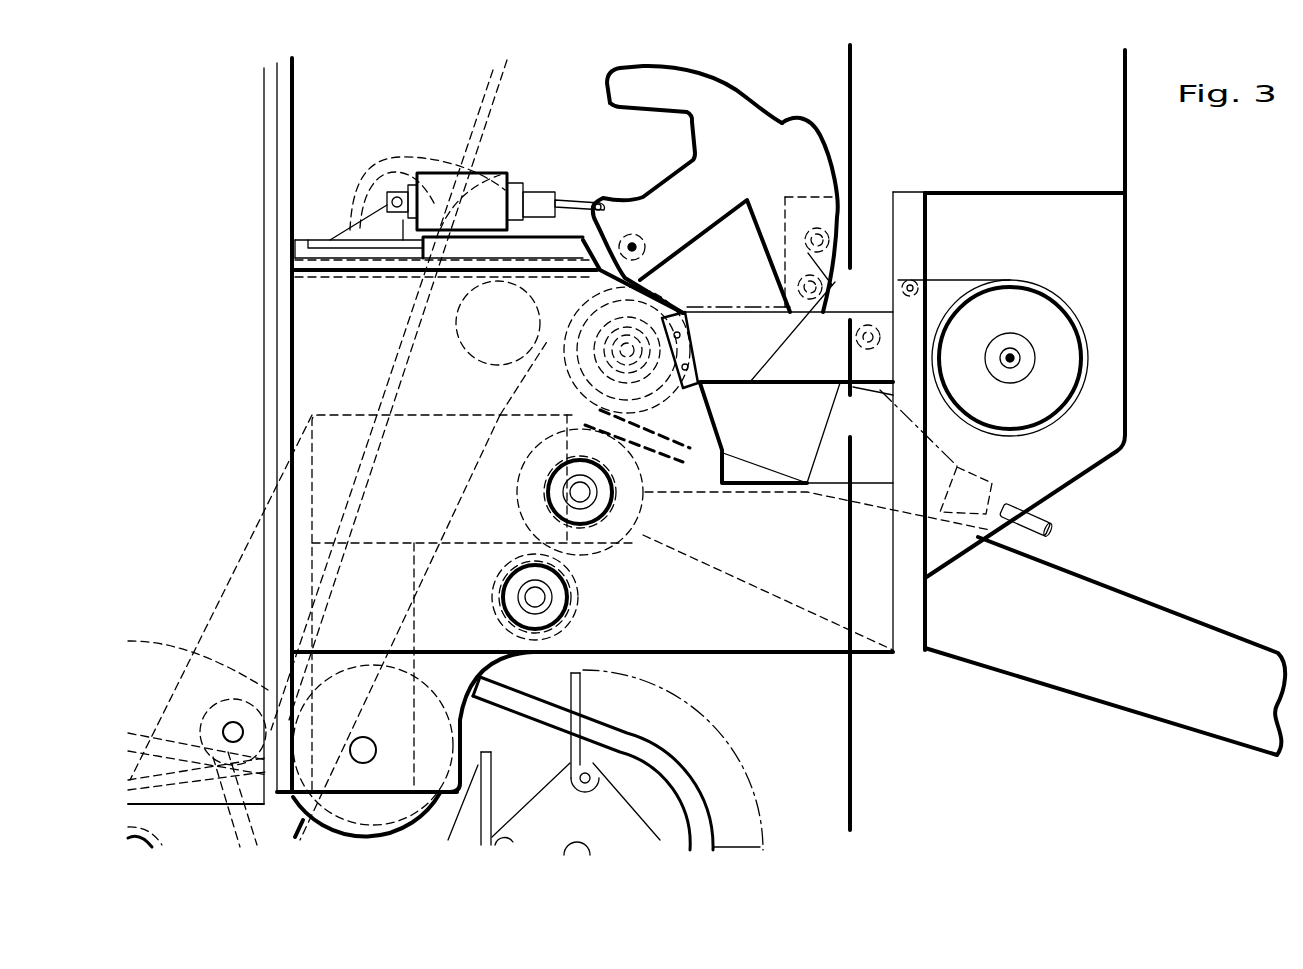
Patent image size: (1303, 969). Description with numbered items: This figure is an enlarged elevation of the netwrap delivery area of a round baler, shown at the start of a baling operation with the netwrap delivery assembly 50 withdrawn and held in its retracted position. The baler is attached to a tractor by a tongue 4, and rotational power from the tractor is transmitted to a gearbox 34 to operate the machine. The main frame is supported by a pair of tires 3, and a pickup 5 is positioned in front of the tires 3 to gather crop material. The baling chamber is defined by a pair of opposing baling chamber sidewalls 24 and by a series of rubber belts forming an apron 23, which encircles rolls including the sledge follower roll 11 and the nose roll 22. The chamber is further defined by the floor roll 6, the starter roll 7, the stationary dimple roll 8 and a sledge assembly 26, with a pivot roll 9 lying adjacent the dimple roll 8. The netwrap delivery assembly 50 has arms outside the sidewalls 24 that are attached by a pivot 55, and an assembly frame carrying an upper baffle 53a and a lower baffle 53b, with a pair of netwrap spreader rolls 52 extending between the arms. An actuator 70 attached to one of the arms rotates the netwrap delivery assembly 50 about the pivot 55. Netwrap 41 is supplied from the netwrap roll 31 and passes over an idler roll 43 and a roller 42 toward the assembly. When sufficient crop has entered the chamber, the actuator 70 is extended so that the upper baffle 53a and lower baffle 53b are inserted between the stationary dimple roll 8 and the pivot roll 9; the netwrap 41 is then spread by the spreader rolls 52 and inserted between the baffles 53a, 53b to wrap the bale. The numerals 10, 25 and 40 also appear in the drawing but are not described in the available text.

The tires 3 is at (164, 640).
The tongue 4 is at (1155, 602).
The pickup 5 is at (790, 68).
The floor roll 6 is at (369, 828).
The starter roll 7 is at (577, 590).
The stationary dimple roll 8 is at (648, 508).
The pivot roll 9 is at (572, 367).
The guide 10 is at (482, 316).
The sledge follower roll 11 is at (387, 172).
The nose roll 22 is at (233, 722).
The apron 23 is at (498, 110).
The baling chamber sidewalls 24 is at (344, 336).
The housing 25 is at (1025, 116).
The sledge assembly 26 is at (362, 166).
The netwrap roll 31 is at (1090, 358).
The gearbox 34 is at (856, 433).
The hook 40 is at (691, 67).
The netwrap 41 is at (963, 281).
The roller 42 is at (878, 326).
The idler roll 43 is at (915, 280).
The netwrap delivery assembly 50 is at (750, 181).
The netwrap spreader rolls 52 is at (812, 230).
The upper baffle 53a is at (770, 364).
The lower baffle 53b is at (762, 378).
The pivot 55 is at (636, 243).
The actuator 70 is at (482, 185).